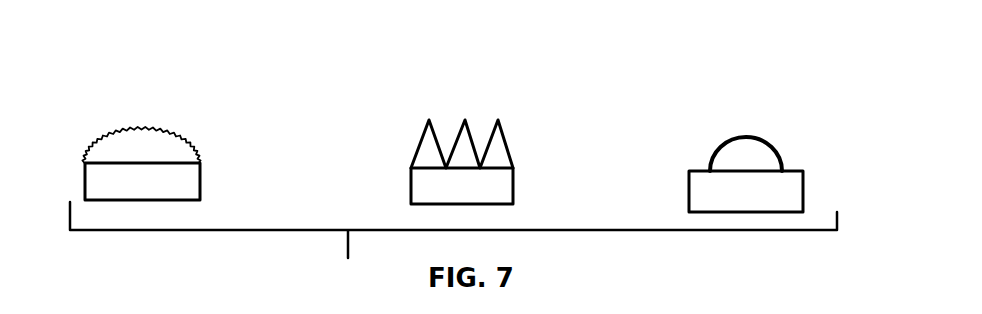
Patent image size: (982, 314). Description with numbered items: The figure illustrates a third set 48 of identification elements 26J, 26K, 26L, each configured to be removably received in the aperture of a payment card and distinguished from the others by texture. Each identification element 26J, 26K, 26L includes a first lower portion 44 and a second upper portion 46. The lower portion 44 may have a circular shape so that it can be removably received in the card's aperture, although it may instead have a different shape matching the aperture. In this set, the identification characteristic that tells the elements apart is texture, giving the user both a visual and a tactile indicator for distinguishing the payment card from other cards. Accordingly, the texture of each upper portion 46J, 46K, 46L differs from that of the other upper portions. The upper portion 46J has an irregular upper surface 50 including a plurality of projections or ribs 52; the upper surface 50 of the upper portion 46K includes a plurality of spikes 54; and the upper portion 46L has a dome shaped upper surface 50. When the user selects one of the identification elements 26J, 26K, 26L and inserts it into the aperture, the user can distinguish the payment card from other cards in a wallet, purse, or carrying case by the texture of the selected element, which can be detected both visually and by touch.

The identification element 26J is at (174, 123).
The identification element 26K is at (502, 122).
The identification element 26L is at (790, 129).
The first lower portion 44 is at (188, 178).
The second upper portion 46 is at (143, 119).
The upper portion 46J is at (165, 154).
The upper portion 46K is at (497, 157).
The upper portion 46L is at (755, 158).
The third set 48 is at (638, 239).
The upper surface 50 is at (86, 142).
The projections or ribs 52 is at (110, 133).
The spikes 54 is at (431, 120).